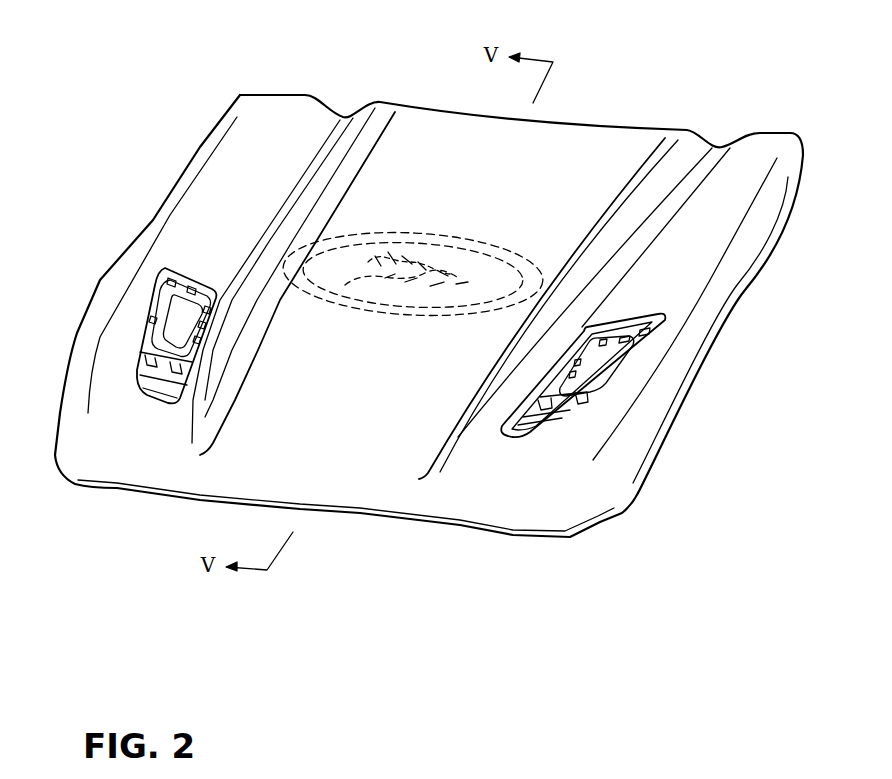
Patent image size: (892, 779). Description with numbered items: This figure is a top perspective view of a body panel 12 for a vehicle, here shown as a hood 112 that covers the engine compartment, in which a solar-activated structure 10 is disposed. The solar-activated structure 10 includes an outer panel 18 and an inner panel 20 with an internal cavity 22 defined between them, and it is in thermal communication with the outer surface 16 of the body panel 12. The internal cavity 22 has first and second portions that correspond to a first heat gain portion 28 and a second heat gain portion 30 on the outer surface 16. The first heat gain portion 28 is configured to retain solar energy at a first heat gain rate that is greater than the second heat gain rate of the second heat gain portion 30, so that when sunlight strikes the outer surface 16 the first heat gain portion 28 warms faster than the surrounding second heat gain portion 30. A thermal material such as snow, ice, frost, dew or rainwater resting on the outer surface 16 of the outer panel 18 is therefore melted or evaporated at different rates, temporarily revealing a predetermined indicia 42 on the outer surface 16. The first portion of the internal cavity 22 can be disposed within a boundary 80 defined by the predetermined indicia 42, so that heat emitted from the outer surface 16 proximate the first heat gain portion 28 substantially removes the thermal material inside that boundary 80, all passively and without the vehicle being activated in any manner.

The solar-activated structure 10 is at (328, 228).
The body panel 12 is at (68, 334).
The outer surface 16 is at (296, 433).
The outer panel 18 is at (93, 438).
The inner panel 20 is at (181, 275).
The internal cavity 22 is at (137, 298).
The first heat gain portion 28 is at (516, 263).
The second heat gain portion 30 is at (353, 462).
The predetermined indicia 42 is at (430, 250).
The boundary 80 is at (455, 317).
The hood 112 is at (627, 440).